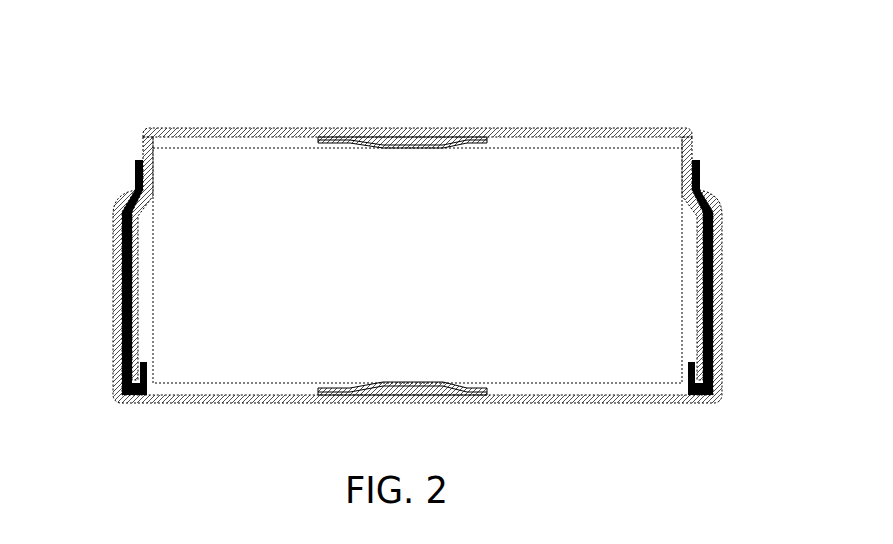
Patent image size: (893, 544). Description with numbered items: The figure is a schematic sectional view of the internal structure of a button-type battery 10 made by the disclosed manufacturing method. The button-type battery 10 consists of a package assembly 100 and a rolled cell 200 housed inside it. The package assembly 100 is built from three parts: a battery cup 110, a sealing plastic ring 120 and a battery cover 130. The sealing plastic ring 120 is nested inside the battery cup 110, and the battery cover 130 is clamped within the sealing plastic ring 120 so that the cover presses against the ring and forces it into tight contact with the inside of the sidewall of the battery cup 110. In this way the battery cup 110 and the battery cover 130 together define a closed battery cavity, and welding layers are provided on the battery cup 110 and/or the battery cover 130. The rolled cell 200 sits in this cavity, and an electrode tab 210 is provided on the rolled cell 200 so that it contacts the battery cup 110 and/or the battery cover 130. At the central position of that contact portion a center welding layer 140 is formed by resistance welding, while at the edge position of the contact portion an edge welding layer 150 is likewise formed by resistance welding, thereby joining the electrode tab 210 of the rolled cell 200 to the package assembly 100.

The button-type battery 10 is at (440, 85).
The package assembly 100 is at (632, 115).
The battery cup 110 is at (115, 260).
The sealing plastic ring 120 is at (140, 397).
The battery cover 130 is at (143, 143).
The center welding layer 140 is at (437, 128).
The edge welding layer 150 is at (338, 135).
The rolled cell 200 is at (688, 130).
The electrode tab 210 is at (312, 135).